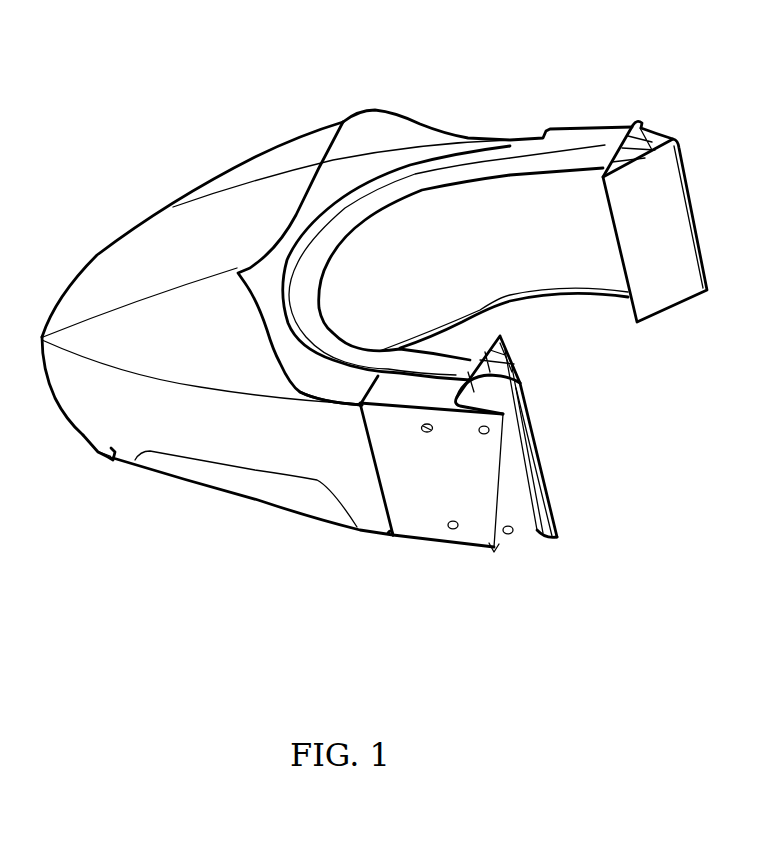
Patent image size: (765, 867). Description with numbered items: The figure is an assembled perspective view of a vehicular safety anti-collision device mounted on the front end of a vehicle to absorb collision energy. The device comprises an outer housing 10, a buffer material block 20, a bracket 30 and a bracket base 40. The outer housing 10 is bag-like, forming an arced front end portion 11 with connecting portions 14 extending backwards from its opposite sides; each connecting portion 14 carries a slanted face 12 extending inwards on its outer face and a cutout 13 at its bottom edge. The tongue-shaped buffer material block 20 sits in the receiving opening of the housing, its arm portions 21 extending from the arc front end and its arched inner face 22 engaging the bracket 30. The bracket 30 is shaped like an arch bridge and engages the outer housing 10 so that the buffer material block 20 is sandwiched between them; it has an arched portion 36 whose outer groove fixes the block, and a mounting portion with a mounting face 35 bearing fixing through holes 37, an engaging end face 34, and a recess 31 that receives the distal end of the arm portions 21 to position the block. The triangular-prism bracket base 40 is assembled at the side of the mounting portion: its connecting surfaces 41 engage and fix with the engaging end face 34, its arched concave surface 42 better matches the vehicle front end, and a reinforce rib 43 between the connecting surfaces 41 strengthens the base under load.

The outer housing 10 is at (320, 142).
The front end portion 11 is at (98, 452).
The slanted face 12 is at (308, 503).
The cutout 13 is at (391, 533).
The connecting portion 14 is at (407, 481).
The buffer material block 20 is at (361, 177).
The arm portion 21 is at (362, 383).
The inner face 22 is at (407, 258).
The bracket 30 is at (545, 160).
The recess 31 is at (377, 475).
The engaging end face 34 is at (632, 123).
The mounting face 35 is at (500, 482).
The arched portion 36 is at (457, 163).
The fixing through hole 37 is at (427, 430).
The bracket base 40 is at (653, 243).
The connecting surface 41 is at (515, 360).
The arched concave surface 42 is at (498, 398).
The reinforce rib 43 is at (523, 383).